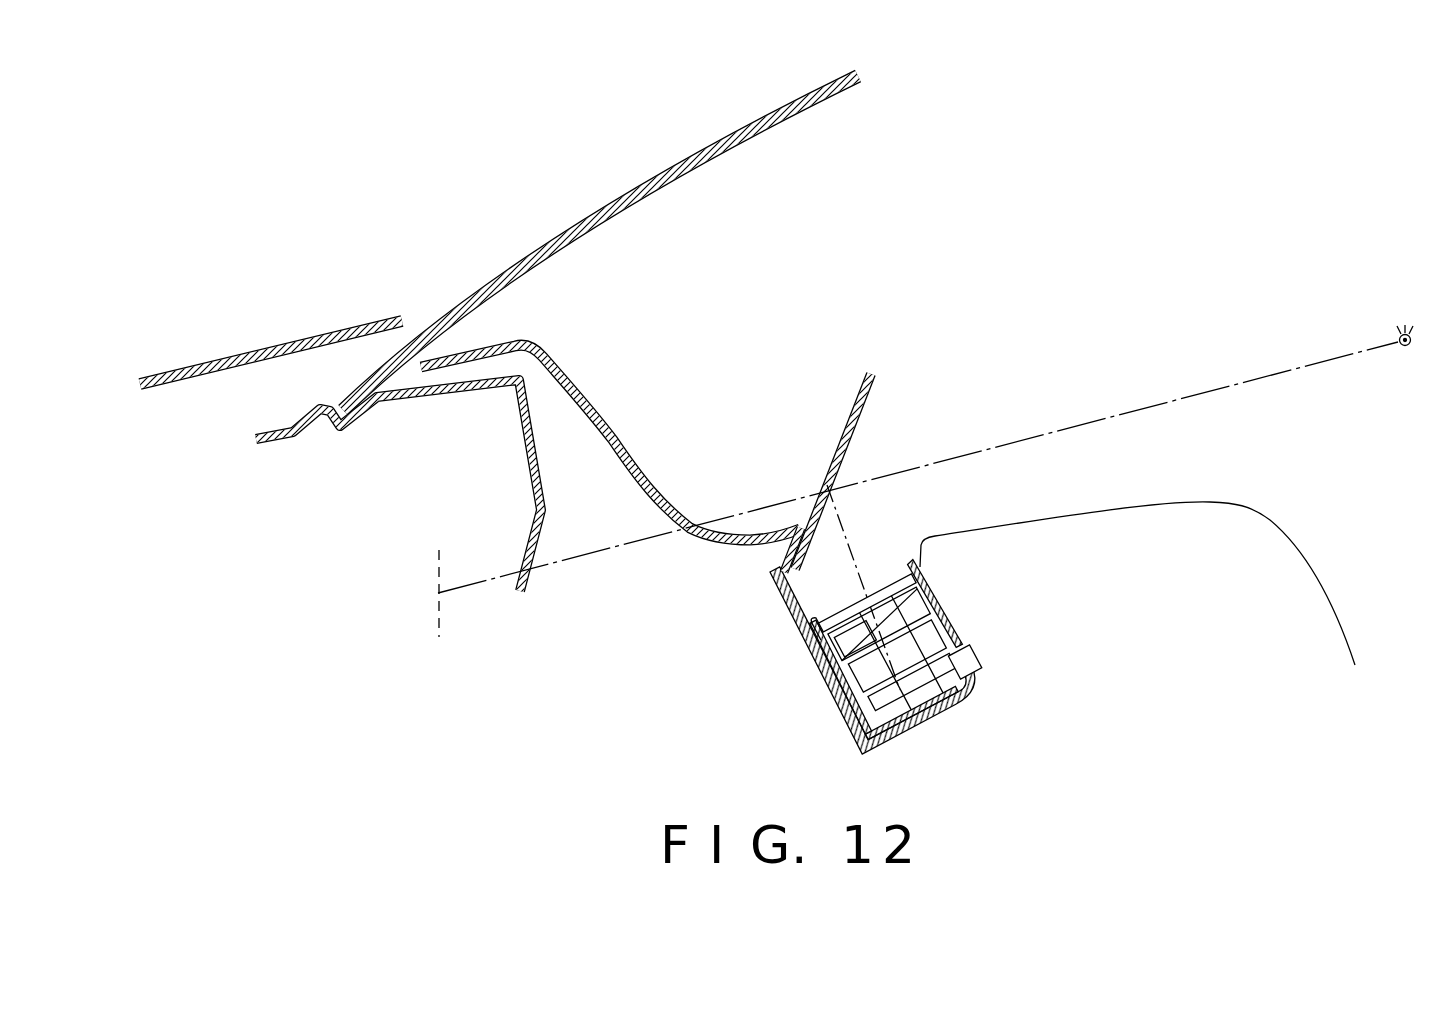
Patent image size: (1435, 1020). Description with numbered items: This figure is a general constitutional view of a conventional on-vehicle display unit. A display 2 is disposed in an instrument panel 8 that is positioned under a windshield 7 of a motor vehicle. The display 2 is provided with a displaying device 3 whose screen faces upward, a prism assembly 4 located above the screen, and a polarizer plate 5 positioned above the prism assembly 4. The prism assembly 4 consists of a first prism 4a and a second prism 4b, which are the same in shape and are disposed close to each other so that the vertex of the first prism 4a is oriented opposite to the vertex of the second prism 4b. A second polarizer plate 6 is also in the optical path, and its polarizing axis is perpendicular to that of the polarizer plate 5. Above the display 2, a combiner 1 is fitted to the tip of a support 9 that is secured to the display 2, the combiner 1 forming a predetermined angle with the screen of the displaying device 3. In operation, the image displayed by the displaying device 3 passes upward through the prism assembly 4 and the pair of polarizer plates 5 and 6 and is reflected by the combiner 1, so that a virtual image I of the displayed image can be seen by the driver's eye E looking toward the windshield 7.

The combiner 1 is at (861, 462).
The display 2 is at (885, 653).
The displaying device 3 is at (953, 702).
The prism assembly 4 is at (900, 733).
The first prism 4a is at (843, 643).
The second prism 4b is at (923, 610).
The polarizer plate 5 is at (840, 620).
The polarizer plate 6 is at (857, 428).
The windshield 7 is at (622, 197).
The instrument panel 8 is at (1311, 548).
The support 9 is at (827, 692).
The driver's eye E is at (1408, 312).
The virtual image I is at (438, 570).